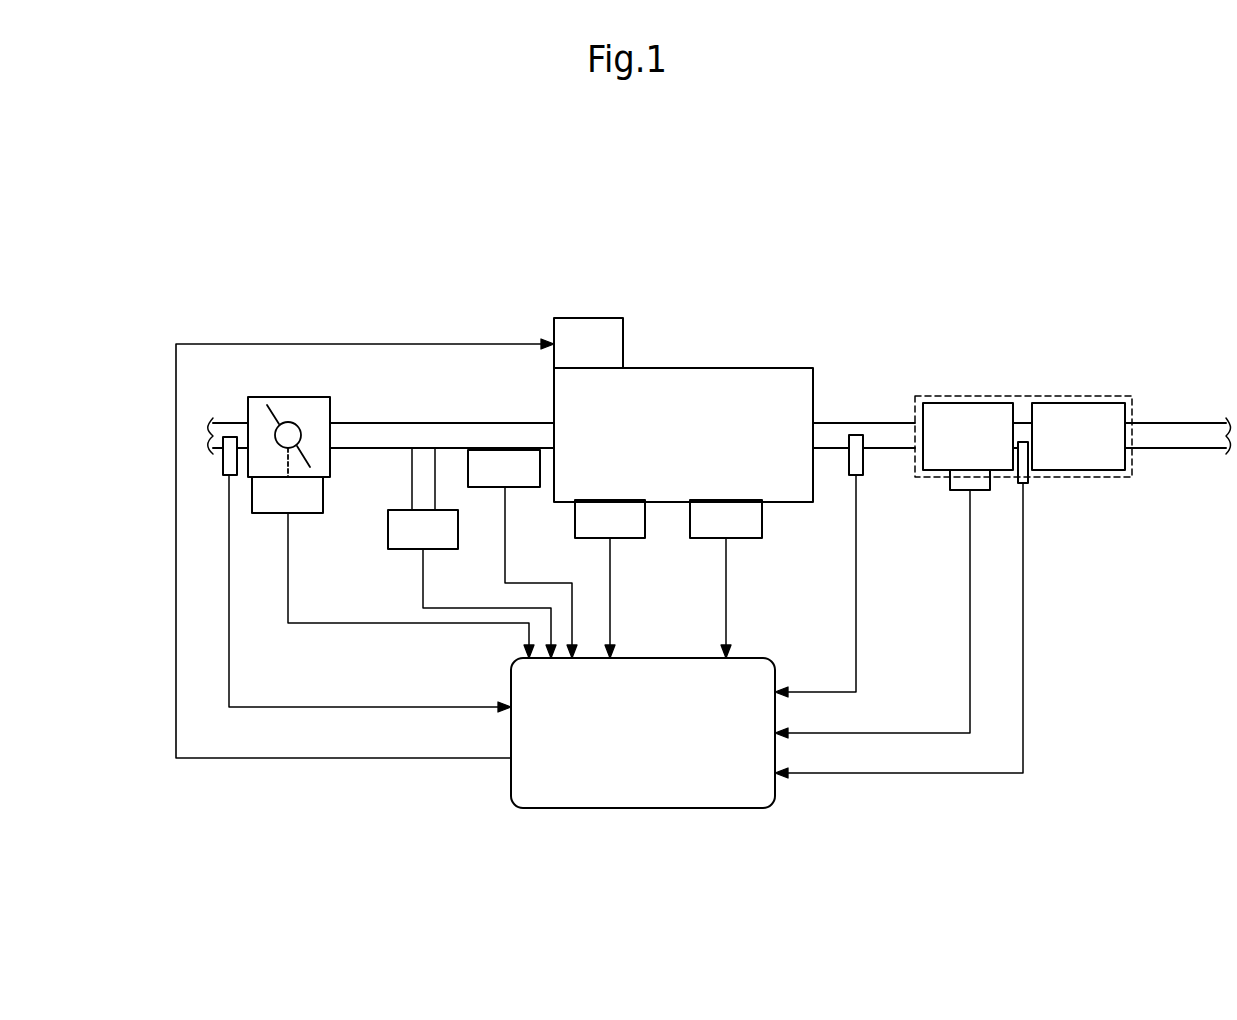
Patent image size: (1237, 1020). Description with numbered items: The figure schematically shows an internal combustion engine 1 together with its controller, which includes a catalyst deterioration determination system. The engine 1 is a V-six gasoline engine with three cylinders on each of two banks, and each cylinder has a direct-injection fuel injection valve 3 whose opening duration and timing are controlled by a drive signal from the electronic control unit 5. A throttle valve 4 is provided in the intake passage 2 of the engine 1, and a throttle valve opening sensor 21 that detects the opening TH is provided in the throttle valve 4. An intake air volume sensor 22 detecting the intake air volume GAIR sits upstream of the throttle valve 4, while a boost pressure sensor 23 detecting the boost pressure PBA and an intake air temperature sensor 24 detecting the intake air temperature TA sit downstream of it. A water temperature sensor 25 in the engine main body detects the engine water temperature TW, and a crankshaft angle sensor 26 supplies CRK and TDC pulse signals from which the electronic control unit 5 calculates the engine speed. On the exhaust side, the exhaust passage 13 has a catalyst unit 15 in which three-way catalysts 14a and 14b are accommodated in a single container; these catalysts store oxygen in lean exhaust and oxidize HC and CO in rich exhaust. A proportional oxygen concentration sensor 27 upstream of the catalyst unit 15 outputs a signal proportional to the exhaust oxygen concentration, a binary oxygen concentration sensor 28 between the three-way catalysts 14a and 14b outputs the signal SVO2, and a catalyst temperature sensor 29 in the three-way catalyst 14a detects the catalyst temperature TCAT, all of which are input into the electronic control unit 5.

The internal combustion engine 1 is at (733, 368).
The intake passage 2 is at (378, 423).
The fuel injection valve 3 is at (588, 318).
The throttle valve 4 is at (262, 412).
The electronic control unit 5 is at (663, 657).
The exhaust passage 13 is at (860, 423).
The three-way catalyst 14a is at (962, 402).
The three-way catalyst 14b is at (1082, 402).
The catalyst unit 15 is at (1022, 396).
The throttle valve opening sensor 21 is at (313, 513).
The intake air volume sensor 22 is at (225, 475).
The boost pressure sensor 23 is at (447, 550).
The intake air temperature sensor 24 is at (512, 488).
The water temperature sensor 25 is at (633, 541).
The crankshaft angle sensor 26 is at (743, 541).
The proportional oxygen concentration sensor 27 is at (858, 477).
The binary oxygen concentration sensor 28 is at (1020, 485).
The catalyst temperature sensor 29 is at (962, 492).